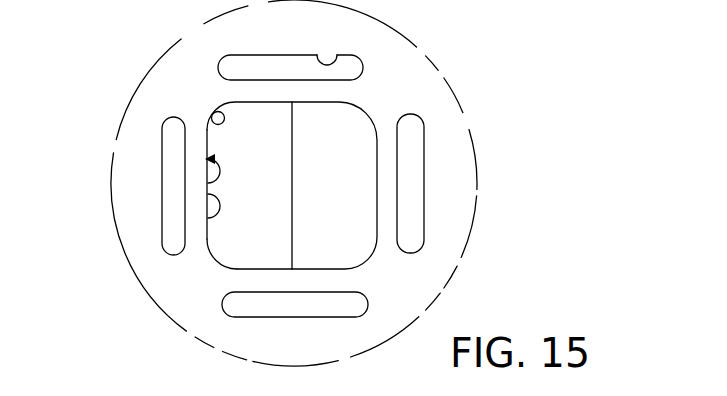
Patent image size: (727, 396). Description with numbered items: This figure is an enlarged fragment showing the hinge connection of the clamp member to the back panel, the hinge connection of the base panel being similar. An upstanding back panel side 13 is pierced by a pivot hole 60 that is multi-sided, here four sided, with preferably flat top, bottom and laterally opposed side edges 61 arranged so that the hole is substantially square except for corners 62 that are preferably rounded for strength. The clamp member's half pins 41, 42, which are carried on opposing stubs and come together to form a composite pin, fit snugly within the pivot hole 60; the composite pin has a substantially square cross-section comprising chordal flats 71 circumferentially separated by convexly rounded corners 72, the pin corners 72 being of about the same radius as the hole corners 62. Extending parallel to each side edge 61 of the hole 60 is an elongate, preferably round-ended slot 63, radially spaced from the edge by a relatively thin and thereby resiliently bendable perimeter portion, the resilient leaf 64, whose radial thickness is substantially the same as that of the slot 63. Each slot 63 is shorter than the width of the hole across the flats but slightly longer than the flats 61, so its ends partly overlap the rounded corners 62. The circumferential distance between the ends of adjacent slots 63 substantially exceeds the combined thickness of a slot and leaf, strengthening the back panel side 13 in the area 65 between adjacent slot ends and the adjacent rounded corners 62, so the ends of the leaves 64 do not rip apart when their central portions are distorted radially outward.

The back panel side 13 is at (182, 70).
The half pin 41 is at (323, 252).
The half pin 42 is at (253, 252).
The pivot hole 60 is at (207, 183).
The side edge 61 is at (207, 217).
The corner 62 is at (212, 122).
The slot 63 is at (338, 56).
The resilient leaf 64 is at (325, 90).
The area 65 is at (195, 96).
The chordal flat 71 is at (273, 270).
The rounded corner 72 is at (220, 253).